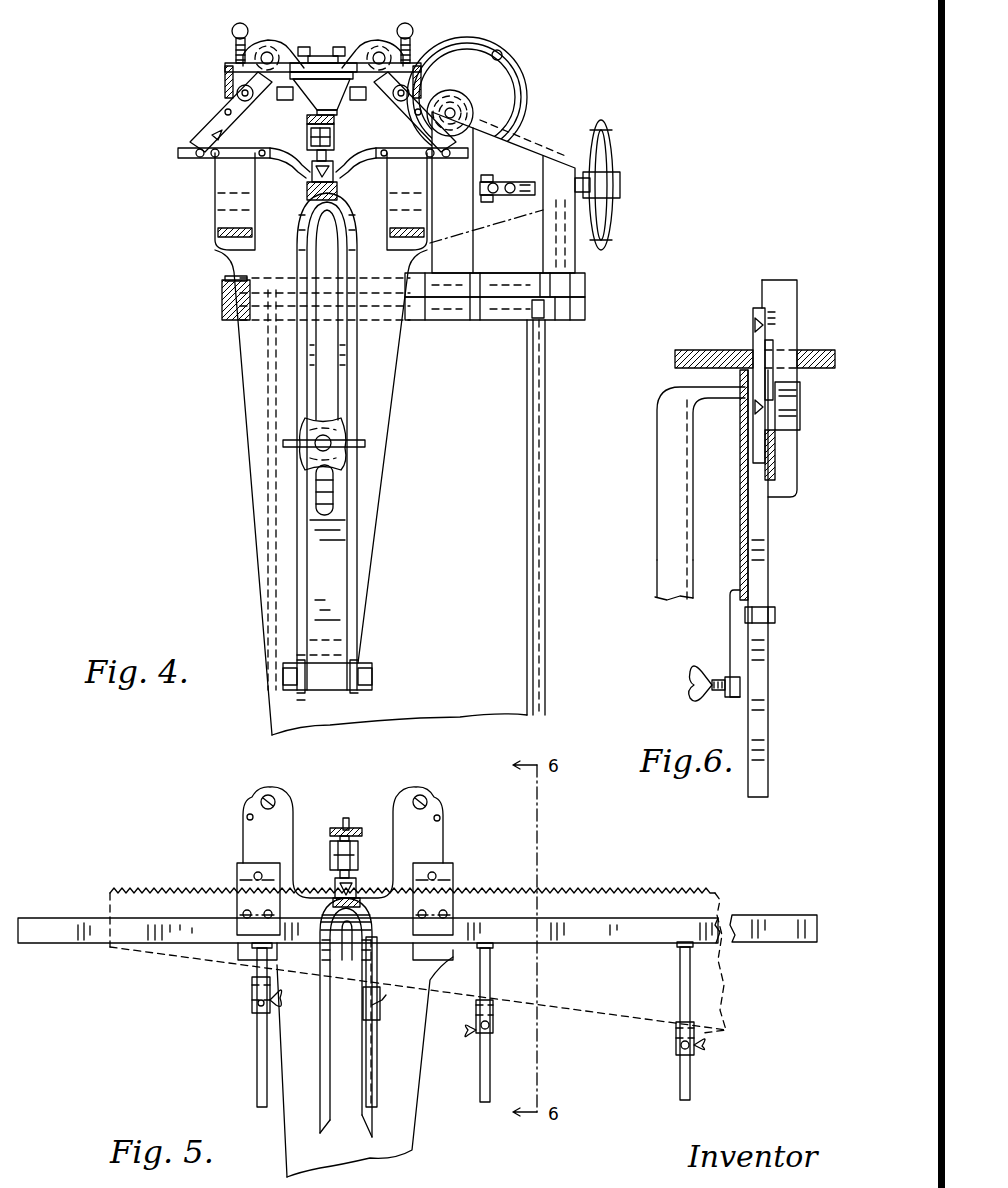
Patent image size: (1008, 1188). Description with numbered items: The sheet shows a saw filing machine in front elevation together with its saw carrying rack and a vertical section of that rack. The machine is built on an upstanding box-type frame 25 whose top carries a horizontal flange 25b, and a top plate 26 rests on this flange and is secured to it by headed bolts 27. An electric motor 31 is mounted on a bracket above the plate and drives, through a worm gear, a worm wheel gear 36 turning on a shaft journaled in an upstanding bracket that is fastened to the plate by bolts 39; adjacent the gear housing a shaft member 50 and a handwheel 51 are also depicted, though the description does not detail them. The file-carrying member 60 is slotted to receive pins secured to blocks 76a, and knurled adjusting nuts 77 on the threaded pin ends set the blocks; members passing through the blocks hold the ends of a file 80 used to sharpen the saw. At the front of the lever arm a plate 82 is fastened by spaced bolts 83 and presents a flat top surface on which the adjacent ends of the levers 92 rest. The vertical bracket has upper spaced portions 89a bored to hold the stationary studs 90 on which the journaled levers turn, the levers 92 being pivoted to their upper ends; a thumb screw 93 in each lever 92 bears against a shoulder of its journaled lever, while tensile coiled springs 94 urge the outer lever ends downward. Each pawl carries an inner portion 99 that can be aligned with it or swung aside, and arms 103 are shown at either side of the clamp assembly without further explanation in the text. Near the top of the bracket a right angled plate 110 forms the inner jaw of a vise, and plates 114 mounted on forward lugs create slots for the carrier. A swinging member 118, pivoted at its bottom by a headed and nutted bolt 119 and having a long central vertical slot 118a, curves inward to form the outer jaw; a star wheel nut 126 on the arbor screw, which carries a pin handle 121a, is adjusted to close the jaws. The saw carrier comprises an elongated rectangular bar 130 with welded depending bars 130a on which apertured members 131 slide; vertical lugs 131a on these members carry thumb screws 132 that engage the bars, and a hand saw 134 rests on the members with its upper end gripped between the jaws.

In FIG. 4, the upstanding frame 25 is at (505, 457).
In FIG. 4, the horizontal flange 25b is at (585, 313).
In FIG. 4, the top plate 26 is at (585, 287).
In FIG. 4, the headed bolts 27 is at (256, 320).
In FIG. 4, the motor 31 is at (512, 95).
In FIG. 4, the worm wheel gear 36 is at (445, 232).
In FIG. 4, the bolts 39 is at (520, 220).
In FIG. 4, the shaft 50 is at (568, 243).
In FIG. 4, the handwheel 51 is at (606, 128).
In FIG. 4, the file-carrying member 60 is at (340, 178).
In FIG. 5, the file-carrying member 60 is at (358, 850).
In FIG. 5, the blocks 76a is at (356, 885).
In FIG. 5, the knurled adjusting nuts 77 is at (352, 828).
In FIG. 6, the file 80 is at (693, 350).
In FIG. 5, the file 80 is at (335, 886).
In FIG. 4, the plate 82 is at (323, 72).
In FIG. 4, the bolts 83 is at (305, 48).
In FIG. 5, the upper spaced portions 89a is at (258, 840).
In FIG. 5, the stationary studs 90 is at (268, 792).
In FIG. 4, the levers 92 is at (280, 44).
In FIG. 4, the thumb screw 93 is at (236, 44).
In FIG. 4, the tensile coiled springs 94 is at (225, 80).
In FIG. 4, the pawl portion 99 is at (283, 147).
In FIG. 4, the pivot arm 103 is at (222, 122).
In FIG. 6, the right angled bracket or plate 110 is at (798, 410).
In FIG. 4, the plates 114 is at (220, 215).
In FIG. 6, the plates 114 is at (755, 338).
In FIG. 4, the swinging member 118 is at (350, 367).
In FIG. 6, the swinging member 118 is at (673, 428).
In FIG. 5, the swinging member 118 is at (327, 1020).
In FIG. 4, the central vertical slot 118a is at (330, 393).
In FIG. 5, the central vertical slot 118a is at (350, 1058).
In FIG. 4, the headed and nutted bolt 119 is at (373, 677).
In FIG. 4, the pin handle 121a is at (376, 445).
In FIG. 4, the nut 126 is at (345, 428).
In FIG. 6, the elongated bar 130 is at (775, 450).
In FIG. 5, the elongated bar 130 is at (573, 942).
In FIG. 6, the depending bars 130a is at (769, 540).
In FIG. 5, the depending bars 130a is at (680, 970).
In FIG. 6, the apertured members 131 is at (775, 615).
In FIG. 6, the lugs 131a is at (730, 633).
In FIG. 5, the lugs 131a is at (497, 1005).
In FIG. 6, the thumb screws 132 is at (698, 672).
In FIG. 5, the thumb screws 132 is at (258, 1000).
In FIG. 6, the hand saw 134 is at (742, 528).
In FIG. 5, the hand saw 134 is at (636, 893).